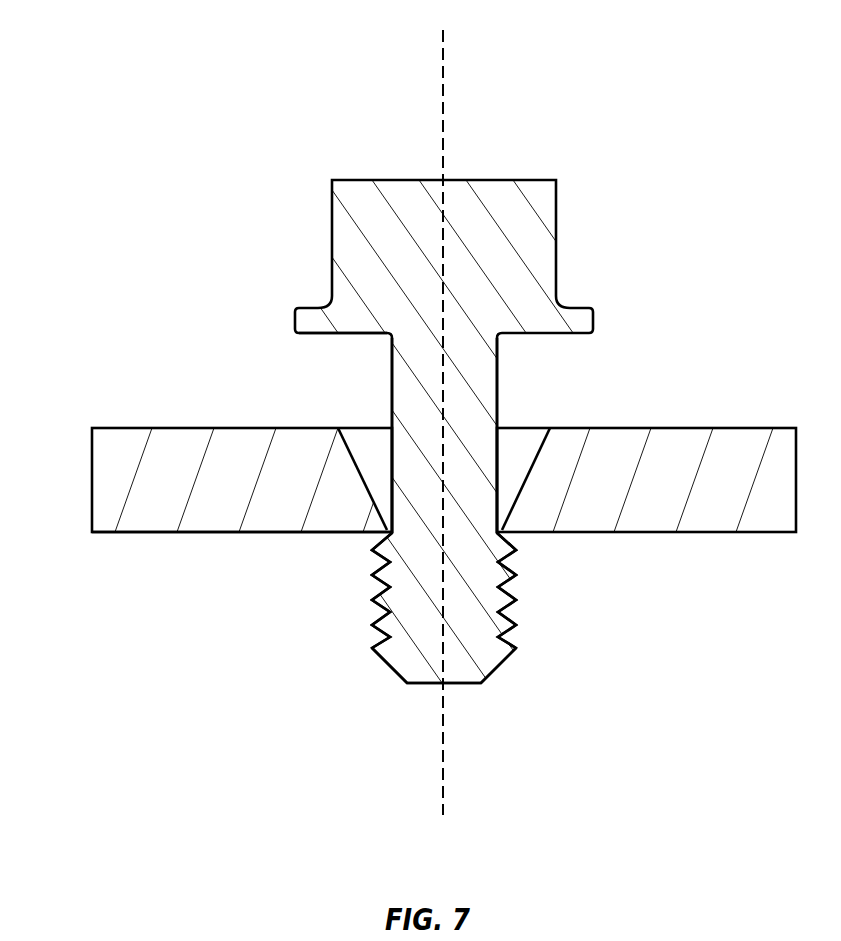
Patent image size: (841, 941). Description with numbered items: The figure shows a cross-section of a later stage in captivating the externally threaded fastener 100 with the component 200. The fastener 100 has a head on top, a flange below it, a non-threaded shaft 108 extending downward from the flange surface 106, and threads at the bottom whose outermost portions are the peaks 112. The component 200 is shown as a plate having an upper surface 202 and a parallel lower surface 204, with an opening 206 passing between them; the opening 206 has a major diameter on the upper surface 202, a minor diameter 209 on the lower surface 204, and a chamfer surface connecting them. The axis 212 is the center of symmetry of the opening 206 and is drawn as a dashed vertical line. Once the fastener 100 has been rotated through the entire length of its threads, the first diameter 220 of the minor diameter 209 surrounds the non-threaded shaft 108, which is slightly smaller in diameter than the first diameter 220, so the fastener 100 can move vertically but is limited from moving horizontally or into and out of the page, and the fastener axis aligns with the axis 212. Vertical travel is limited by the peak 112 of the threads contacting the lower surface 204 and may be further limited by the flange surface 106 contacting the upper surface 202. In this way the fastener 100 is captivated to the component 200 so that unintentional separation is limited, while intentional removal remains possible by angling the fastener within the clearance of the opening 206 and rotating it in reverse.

The externally threaded fastener 100 is at (548, 203).
The surface of the flange 106 is at (326, 348).
The non-threaded shaft 108 is at (497, 392).
The peak 112 is at (380, 546).
The component 200 is at (755, 428).
The upper surface 202 is at (113, 427).
The lower surface 204 is at (118, 534).
The opening 206 is at (537, 418).
The minor diameter 209 is at (562, 602).
The axis 212 is at (443, 67).
The first diameter portion 220 is at (330, 596).